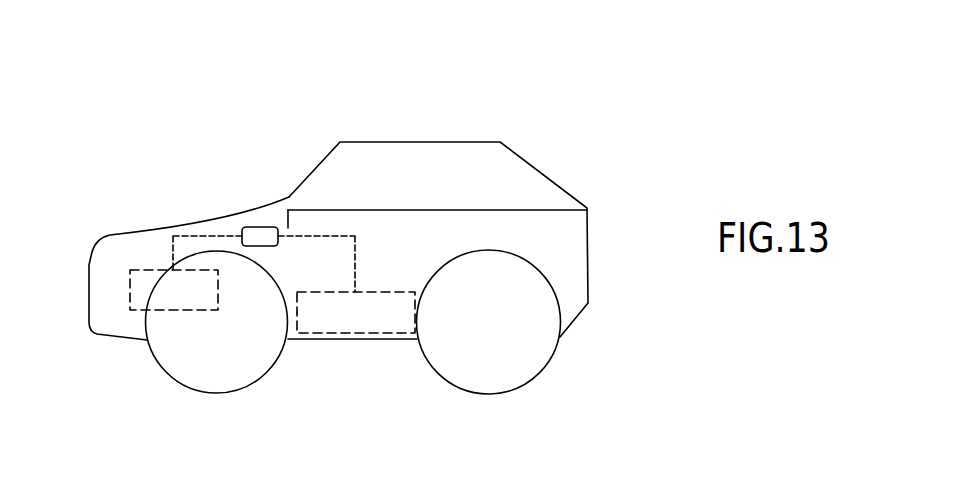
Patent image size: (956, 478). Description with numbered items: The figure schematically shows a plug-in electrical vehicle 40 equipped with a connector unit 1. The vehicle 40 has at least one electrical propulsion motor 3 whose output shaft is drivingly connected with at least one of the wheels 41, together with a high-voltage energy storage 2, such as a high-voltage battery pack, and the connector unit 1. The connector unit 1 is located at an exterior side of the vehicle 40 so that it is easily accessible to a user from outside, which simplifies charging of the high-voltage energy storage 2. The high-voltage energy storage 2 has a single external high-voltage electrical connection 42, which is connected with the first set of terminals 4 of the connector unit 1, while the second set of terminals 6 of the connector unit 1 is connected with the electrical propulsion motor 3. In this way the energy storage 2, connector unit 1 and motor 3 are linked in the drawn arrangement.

The plug-in electrical vehicle 40 is at (147, 158).
The wheels 41 is at (218, 343).
The external high-voltage electrical connection 42 is at (355, 292).
The connector unit 1 is at (265, 233).
The high-voltage energy storage 2 is at (332, 318).
The electrical propulsion motor 3 is at (130, 310).
The first set of terminals 4 is at (278, 228).
The second set of terminals 6 is at (242, 227).